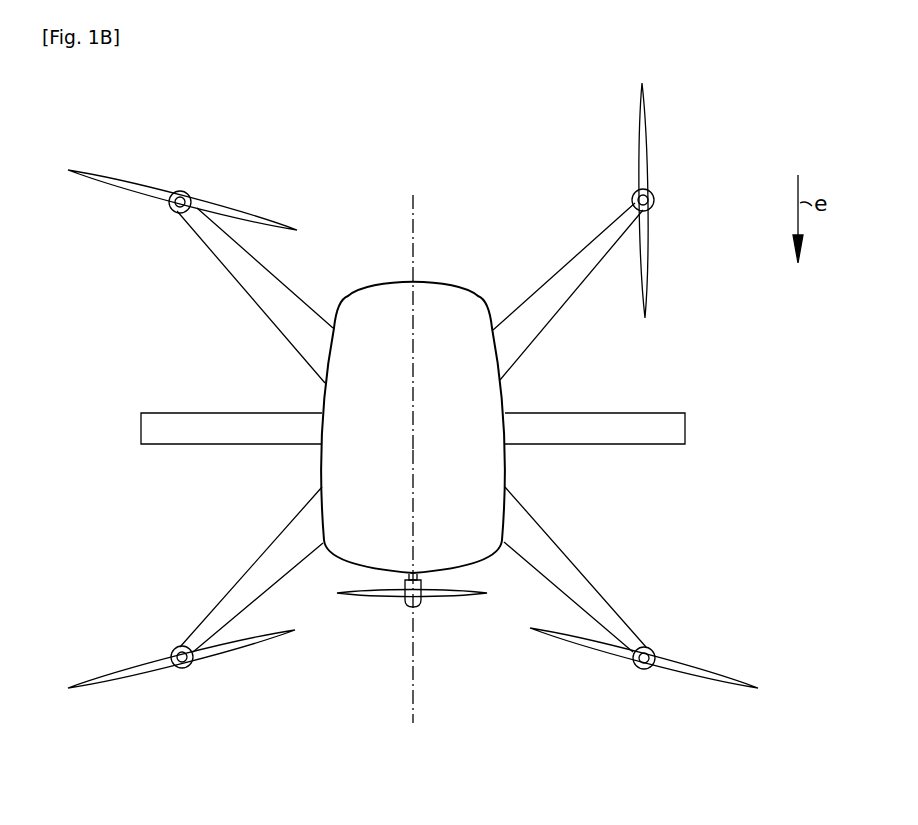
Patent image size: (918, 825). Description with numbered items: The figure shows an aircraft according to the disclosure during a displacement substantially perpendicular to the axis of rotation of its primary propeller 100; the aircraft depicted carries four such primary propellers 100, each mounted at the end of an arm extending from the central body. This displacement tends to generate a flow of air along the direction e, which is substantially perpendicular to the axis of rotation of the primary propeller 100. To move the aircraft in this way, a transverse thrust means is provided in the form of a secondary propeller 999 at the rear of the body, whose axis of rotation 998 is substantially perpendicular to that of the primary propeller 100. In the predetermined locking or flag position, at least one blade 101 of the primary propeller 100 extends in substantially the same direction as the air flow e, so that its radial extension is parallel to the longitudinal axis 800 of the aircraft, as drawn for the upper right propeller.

The primary propeller 100 is at (416, 385).
The blade 101 is at (650, 297).
The longitudinal axis 800 is at (412, 228).
The axis of rotation 998 is at (413, 663).
The secondary propeller 999 is at (370, 600).